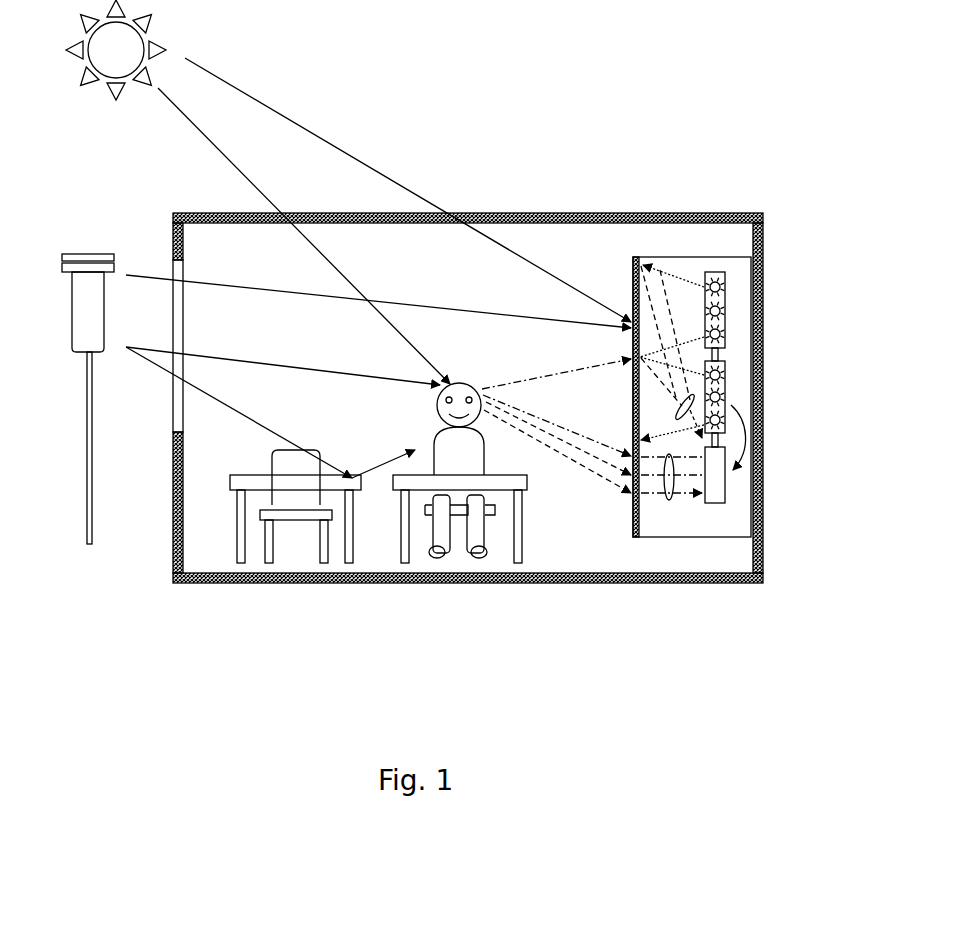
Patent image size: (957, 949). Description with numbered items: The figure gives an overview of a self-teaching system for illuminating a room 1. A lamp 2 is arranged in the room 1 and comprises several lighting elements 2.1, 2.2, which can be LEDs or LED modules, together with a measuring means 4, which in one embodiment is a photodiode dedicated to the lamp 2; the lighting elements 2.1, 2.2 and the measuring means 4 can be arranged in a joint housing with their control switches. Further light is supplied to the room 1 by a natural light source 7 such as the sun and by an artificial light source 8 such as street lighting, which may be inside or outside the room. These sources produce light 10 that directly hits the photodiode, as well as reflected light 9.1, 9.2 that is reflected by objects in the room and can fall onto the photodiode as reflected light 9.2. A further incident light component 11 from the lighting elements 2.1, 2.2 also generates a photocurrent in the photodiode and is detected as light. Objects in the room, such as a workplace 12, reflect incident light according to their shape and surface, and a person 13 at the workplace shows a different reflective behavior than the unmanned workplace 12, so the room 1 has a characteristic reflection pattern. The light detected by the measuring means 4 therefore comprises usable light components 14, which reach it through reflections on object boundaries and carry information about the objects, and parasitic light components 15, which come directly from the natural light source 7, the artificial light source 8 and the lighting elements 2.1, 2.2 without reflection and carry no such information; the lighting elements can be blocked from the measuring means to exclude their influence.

The room 1 is at (562, 156).
The lamp 2 is at (692, 257).
The lighting element 2.1 is at (727, 312).
The lighting element 2.2 is at (727, 375).
The measuring means 4 is at (727, 483).
The natural light source 7 is at (160, 37).
The artificial light source 8 is at (68, 300).
The reflected light 9.1 is at (165, 381).
The reflected light 9.2 is at (381, 462).
The light 10 is at (212, 290).
The incident light component 11 is at (740, 412).
The workplace 12 is at (300, 612).
The person 13 is at (452, 607).
The usable light component 14 is at (671, 500).
The parasitic light component 15 is at (673, 412).